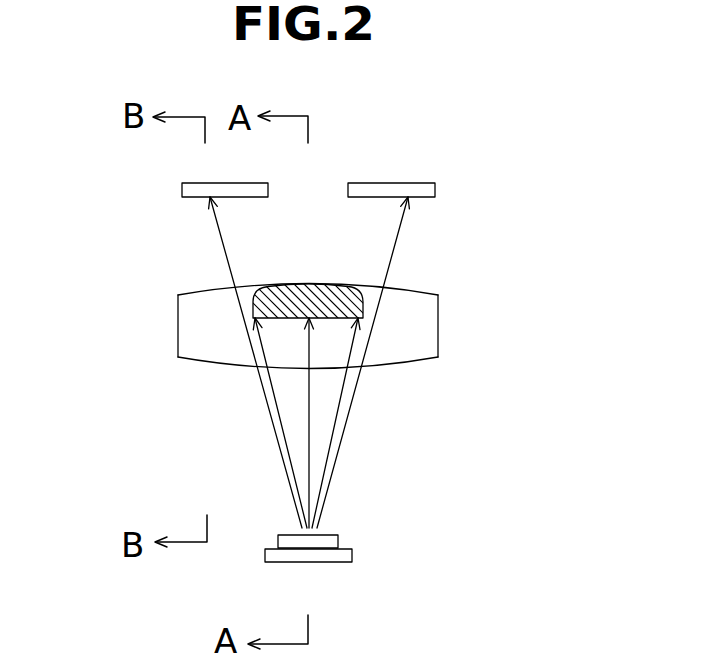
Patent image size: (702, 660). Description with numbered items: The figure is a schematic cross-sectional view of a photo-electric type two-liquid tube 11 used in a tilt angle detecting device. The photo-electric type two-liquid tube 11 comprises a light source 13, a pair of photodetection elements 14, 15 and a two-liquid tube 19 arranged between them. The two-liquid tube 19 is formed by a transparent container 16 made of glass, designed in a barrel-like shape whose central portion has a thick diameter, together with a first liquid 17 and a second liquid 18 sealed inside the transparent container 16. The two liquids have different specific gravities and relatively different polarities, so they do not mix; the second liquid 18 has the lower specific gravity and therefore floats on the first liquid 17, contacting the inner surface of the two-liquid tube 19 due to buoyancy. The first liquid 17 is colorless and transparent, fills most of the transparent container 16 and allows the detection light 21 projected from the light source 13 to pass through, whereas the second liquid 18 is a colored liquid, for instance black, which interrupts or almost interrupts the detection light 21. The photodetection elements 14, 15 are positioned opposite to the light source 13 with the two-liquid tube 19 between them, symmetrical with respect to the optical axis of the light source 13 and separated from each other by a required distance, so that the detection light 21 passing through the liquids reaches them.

The photo-electric type two-liquid tube 11 is at (200, 433).
The light source 13 is at (263, 553).
The photodetection element 14 is at (190, 183).
The photodetection element 15 is at (422, 183).
The transparent container 16 is at (397, 367).
The first liquid 17 is at (422, 340).
The second liquid 18 is at (280, 318).
The two-liquid tube 19 is at (369, 376).
The detection light 21 is at (328, 480).